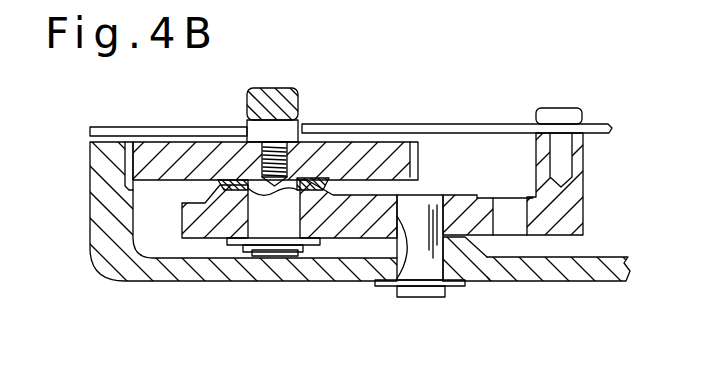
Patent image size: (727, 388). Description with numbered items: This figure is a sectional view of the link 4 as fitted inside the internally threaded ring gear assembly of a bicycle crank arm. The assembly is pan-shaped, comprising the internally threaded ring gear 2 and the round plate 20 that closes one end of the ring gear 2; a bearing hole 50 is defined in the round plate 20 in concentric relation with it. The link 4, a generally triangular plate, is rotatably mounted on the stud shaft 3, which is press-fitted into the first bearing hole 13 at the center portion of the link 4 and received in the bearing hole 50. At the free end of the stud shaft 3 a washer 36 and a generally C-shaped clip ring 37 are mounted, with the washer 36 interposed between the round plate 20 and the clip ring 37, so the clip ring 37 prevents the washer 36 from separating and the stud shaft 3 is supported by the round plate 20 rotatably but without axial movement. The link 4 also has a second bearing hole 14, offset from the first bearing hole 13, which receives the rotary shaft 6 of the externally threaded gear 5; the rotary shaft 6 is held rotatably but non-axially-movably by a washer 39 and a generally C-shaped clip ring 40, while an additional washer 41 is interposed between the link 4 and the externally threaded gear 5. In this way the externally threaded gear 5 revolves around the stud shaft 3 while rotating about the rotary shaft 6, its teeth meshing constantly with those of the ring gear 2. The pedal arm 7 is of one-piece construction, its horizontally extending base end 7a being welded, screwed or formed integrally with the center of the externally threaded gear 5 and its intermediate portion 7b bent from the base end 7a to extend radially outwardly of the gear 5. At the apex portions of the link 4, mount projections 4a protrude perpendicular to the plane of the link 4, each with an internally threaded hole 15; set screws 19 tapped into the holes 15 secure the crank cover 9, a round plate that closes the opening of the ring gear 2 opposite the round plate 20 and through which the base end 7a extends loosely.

The internally threaded ring gear 2 is at (155, 275).
The stud shaft 3 is at (421, 208).
The link 4 is at (584, 213).
The mount projections 4a is at (583, 167).
The externally threaded gear 5 is at (387, 142).
The rotary shaft 6 is at (316, 260).
The pedal arm 7 is at (284, 106).
The base end 7a is at (290, 128).
The intermediate portion 7b is at (280, 92).
The crank cover 9 is at (145, 127).
The first bearing hole 13 is at (396, 275).
The second bearing hole 14 is at (297, 215).
The internally threaded hole 15 is at (571, 105).
The set screws 19 is at (549, 117).
The round plate 20 is at (538, 278).
The washer 36 is at (471, 283).
The C-shaped clip ring 37 is at (445, 290).
The washer 39 is at (240, 244).
The C-shaped clip ring 40 is at (252, 250).
The additional washer 41 is at (222, 183).
The bearing hole 50 is at (423, 290).